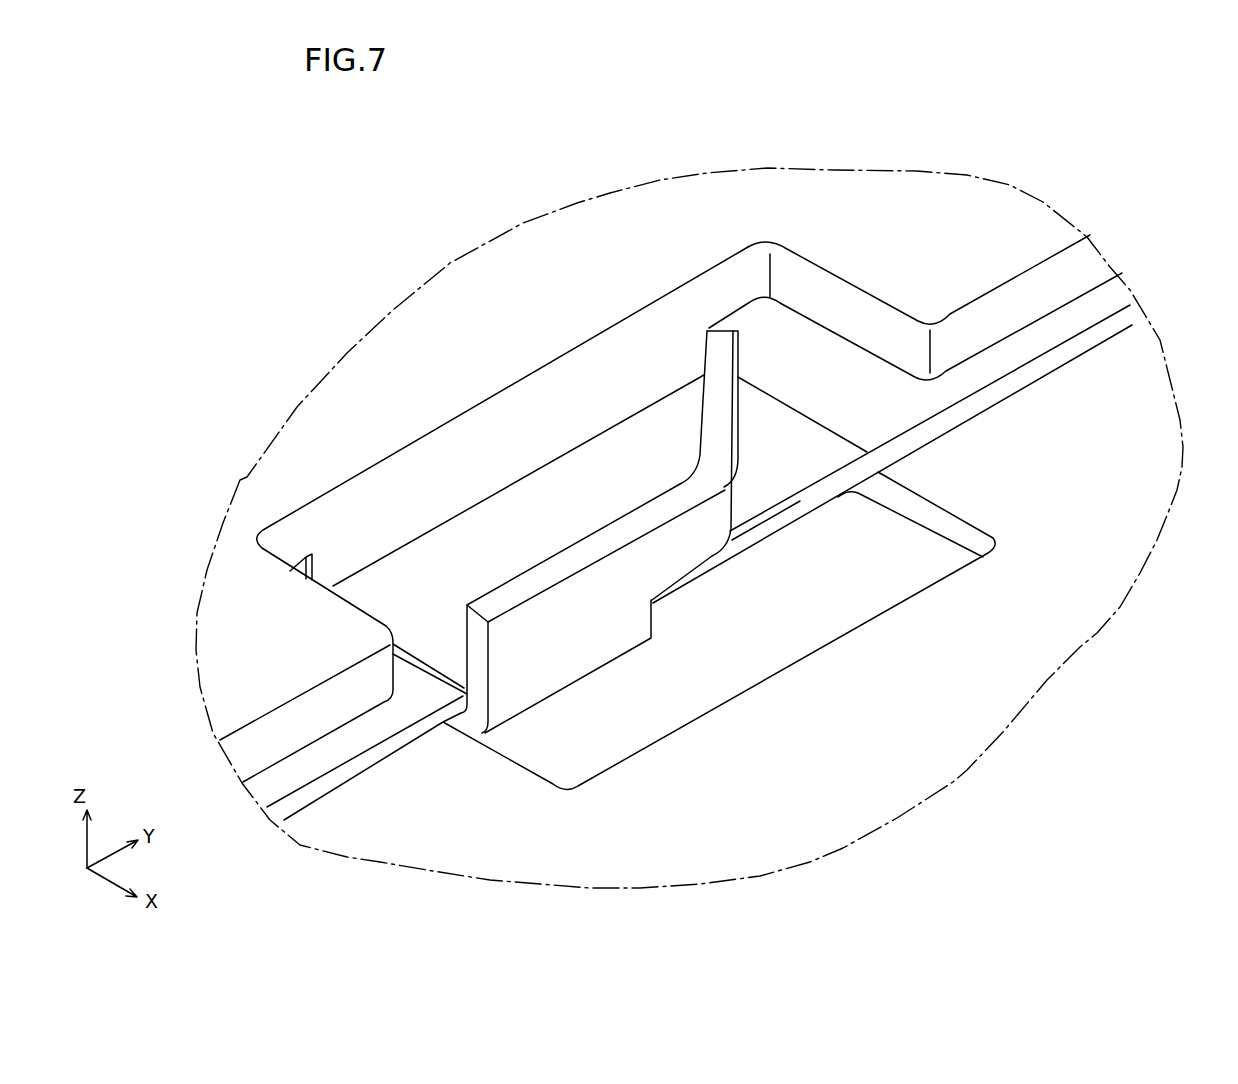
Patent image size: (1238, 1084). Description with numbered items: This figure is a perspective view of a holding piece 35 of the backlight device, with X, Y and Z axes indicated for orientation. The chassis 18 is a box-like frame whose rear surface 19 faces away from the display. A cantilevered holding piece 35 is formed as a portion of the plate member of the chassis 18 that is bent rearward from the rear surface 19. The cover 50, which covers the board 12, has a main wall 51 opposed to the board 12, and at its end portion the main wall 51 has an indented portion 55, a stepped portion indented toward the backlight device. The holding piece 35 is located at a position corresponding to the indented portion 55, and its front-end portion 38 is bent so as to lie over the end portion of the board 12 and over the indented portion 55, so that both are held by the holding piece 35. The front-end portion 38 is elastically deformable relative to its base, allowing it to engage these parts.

The board 12 is at (875, 395).
The chassis 18 is at (1090, 432).
The rear surface 19 is at (519, 838).
The holding piece 35 is at (573, 600).
The front-end portion 38 is at (712, 395).
The cover 50 is at (588, 230).
The main wall 51 is at (452, 296).
The indented portion 55 is at (778, 437).